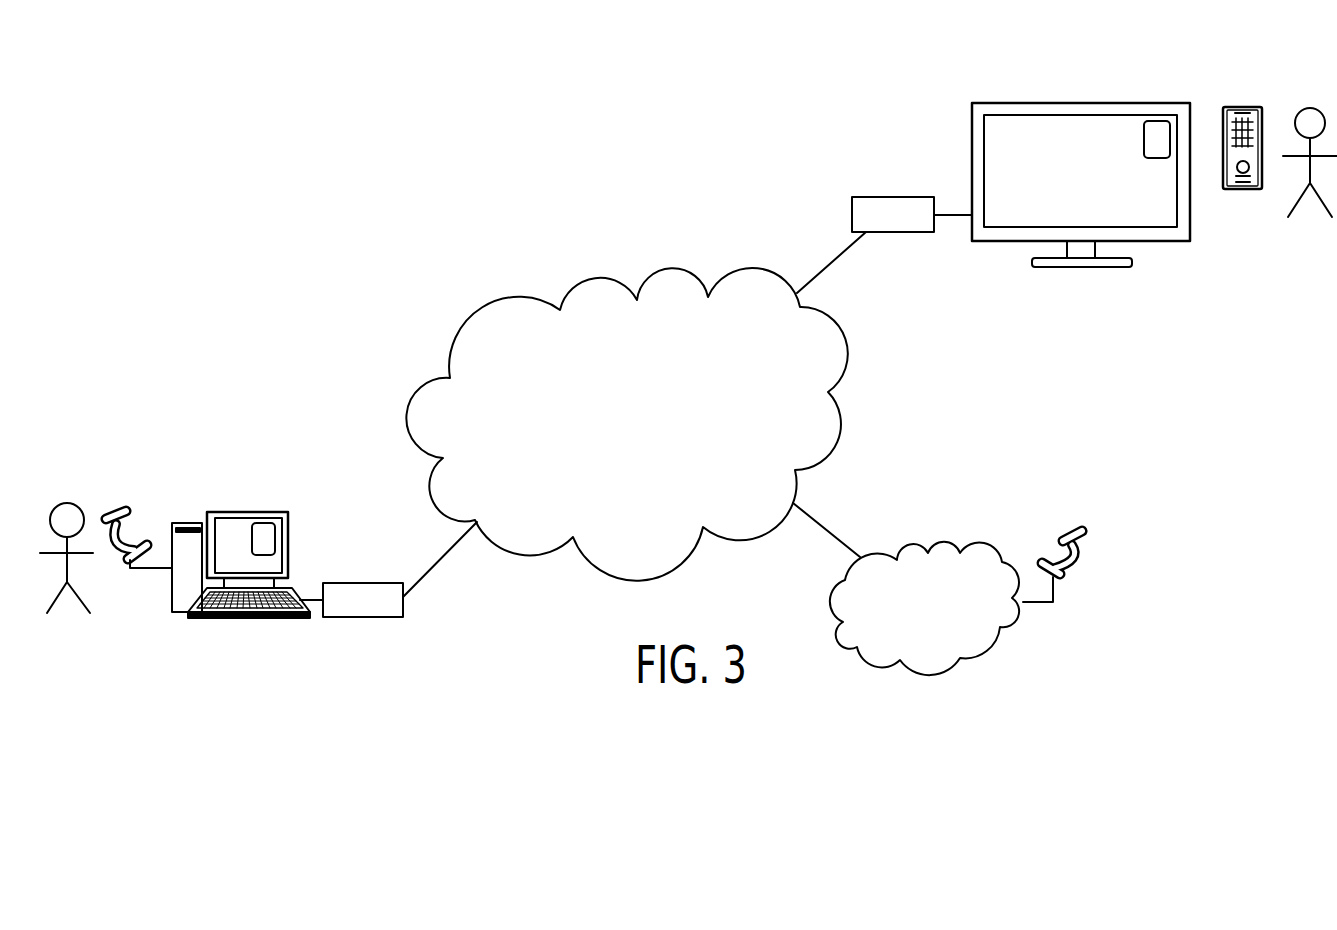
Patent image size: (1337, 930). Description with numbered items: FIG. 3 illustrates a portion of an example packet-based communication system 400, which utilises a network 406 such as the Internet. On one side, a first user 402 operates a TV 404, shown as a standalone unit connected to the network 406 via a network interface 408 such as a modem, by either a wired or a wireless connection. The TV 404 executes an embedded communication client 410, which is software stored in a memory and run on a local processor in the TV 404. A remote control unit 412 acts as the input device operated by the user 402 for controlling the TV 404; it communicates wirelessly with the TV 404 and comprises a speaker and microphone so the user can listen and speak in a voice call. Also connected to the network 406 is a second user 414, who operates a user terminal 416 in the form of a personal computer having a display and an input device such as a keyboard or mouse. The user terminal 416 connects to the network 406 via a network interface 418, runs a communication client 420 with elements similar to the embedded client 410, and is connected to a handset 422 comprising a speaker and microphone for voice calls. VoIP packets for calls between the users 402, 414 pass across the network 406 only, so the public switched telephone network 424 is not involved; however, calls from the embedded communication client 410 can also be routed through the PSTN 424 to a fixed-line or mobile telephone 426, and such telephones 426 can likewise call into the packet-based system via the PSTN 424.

The system 400 is at (401, 232).
The first user 402 is at (1310, 108).
The TV 404 is at (1021, 103).
The network 406 is at (850, 422).
The network interface 408 is at (890, 197).
The embedded communication client 410 is at (1160, 121).
The remote control unit 412 is at (1245, 107).
The second user 414 is at (65, 503).
The user terminal 416 is at (212, 510).
The network interface 418 is at (361, 583).
The communication client 420 is at (262, 523).
The handset 422 is at (126, 512).
The public switched telephone network 424 is at (1000, 640).
The fixed-line or mobile telephone 426 is at (1066, 527).